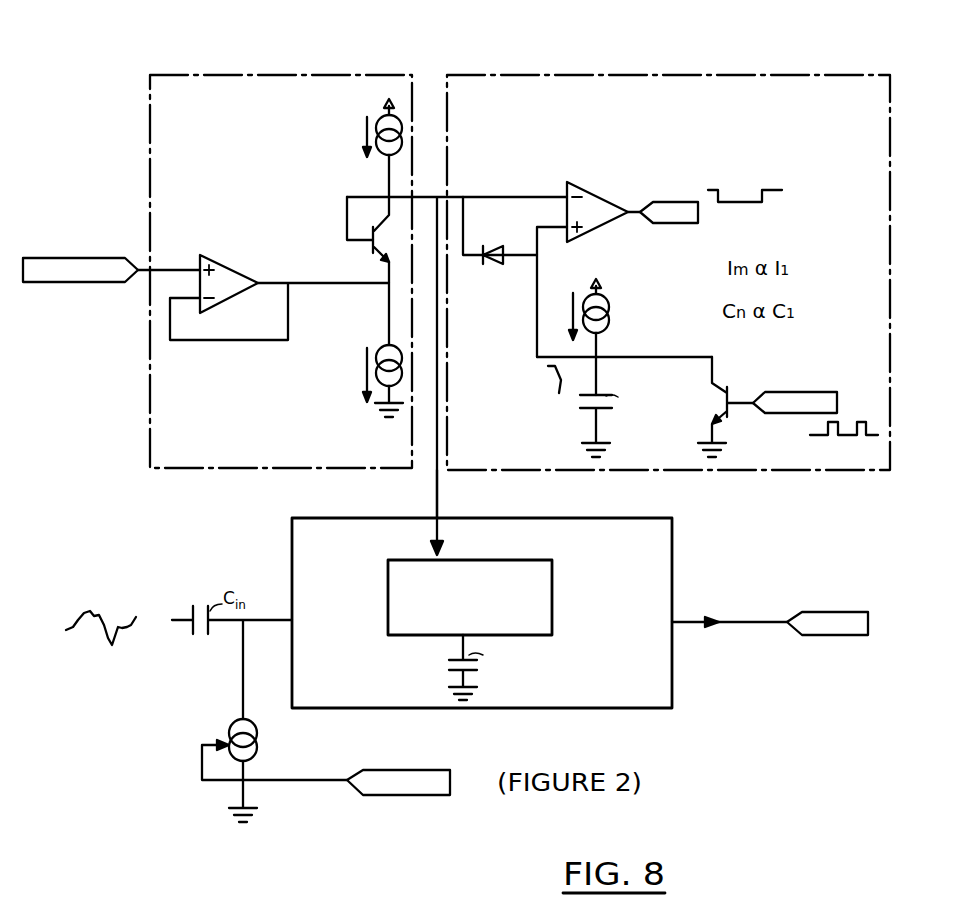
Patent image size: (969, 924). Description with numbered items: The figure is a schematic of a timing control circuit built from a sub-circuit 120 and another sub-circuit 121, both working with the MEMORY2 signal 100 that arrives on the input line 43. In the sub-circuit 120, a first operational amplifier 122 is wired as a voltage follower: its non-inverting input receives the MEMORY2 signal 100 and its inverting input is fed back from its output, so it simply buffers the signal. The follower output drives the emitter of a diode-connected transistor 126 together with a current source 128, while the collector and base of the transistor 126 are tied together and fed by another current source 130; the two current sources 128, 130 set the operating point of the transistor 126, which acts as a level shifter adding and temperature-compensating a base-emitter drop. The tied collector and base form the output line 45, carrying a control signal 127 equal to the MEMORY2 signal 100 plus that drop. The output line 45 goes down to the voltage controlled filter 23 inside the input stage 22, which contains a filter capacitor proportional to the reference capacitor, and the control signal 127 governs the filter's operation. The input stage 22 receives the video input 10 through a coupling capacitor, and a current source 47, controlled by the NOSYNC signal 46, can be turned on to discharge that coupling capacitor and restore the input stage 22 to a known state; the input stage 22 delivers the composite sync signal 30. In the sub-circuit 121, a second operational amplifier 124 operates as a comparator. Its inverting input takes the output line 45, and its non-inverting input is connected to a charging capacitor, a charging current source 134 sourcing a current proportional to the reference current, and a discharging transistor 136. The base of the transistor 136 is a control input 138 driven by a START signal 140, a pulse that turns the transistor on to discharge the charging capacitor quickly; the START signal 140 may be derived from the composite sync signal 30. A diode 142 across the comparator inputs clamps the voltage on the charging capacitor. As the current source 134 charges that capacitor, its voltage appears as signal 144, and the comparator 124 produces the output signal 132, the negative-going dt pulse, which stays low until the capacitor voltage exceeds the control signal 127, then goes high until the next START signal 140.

The sub-circuit 120 is at (265, 75).
The sub-circuit 121 is at (735, 75).
The MEMORY2 signal 100 is at (92, 258).
The input line 43 is at (145, 272).
The first operational amplifier 122 is at (233, 270).
The current source 130 is at (378, 158).
The diode-connected transistor 126 is at (370, 250).
The current source 128 is at (385, 346).
The output line 45 is at (423, 197).
The control signal 127 is at (432, 488).
The second operational amplifier 124 is at (600, 194).
The output signal 132 is at (718, 190).
The diode 142 is at (492, 268).
The charging current source 134 is at (610, 331).
The voltage level V(cn) signal 144 is at (587, 394).
The discharging transistor 136 is at (729, 390).
The control input 138 is at (815, 392).
The START signal 140 is at (863, 422).
The input stage 22 is at (672, 572).
The voltage controlled filter 23 is at (552, 608).
The composite sync signal 30 is at (830, 612).
The video input signal 10 is at (78, 633).
The current source 47 is at (258, 738).
The NOSYNC signal 46 is at (432, 770).